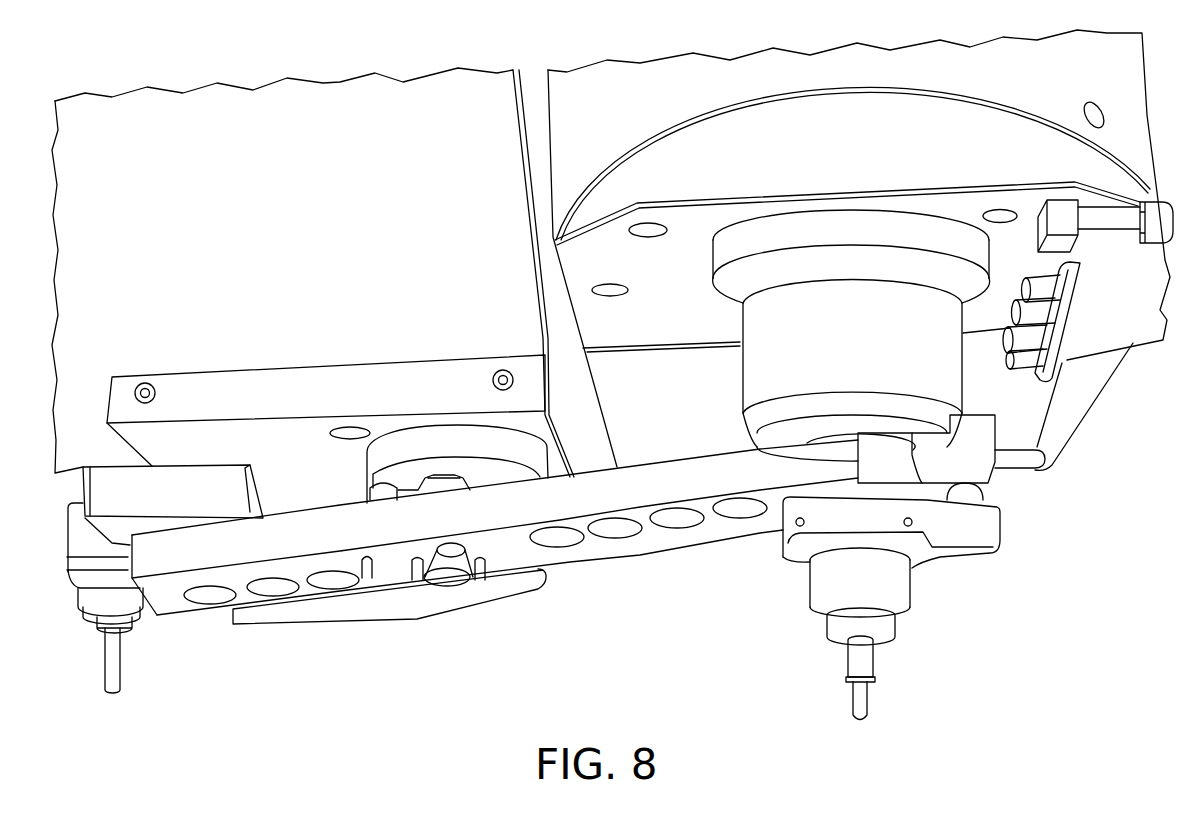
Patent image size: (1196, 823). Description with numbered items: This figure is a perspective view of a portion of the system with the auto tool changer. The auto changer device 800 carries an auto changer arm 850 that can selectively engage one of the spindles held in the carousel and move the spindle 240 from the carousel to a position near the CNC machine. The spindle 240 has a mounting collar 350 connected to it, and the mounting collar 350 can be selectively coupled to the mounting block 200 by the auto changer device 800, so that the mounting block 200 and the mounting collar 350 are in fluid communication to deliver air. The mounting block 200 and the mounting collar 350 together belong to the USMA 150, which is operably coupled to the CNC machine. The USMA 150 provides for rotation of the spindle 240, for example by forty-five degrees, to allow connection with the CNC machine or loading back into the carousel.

The auto changer device 800 is at (331, 366).
The auto changer arm 850 is at (650, 544).
The mounting block 200 is at (990, 466).
The mounting collar 350 is at (1000, 539).
The spindle 240 is at (920, 607).
The USMA 150 is at (999, 581).